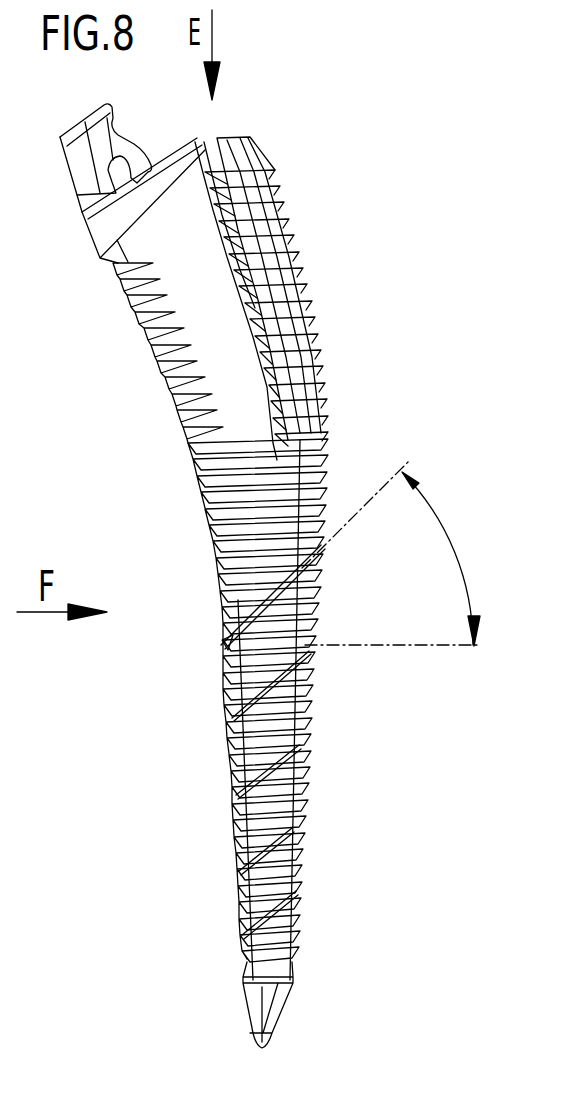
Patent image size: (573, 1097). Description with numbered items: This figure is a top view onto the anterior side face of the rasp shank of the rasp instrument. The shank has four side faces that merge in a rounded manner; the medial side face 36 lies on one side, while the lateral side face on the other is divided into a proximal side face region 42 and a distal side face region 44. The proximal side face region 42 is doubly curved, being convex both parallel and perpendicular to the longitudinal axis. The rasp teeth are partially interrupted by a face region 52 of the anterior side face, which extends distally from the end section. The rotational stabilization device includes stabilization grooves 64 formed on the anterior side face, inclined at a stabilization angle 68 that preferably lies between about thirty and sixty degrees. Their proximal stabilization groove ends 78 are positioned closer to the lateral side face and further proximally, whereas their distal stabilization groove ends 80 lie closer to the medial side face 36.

The medial side face 36 is at (118, 331).
The proximal side face region 42 is at (273, 118).
The distal side face region 44 is at (390, 552).
The face region 52 is at (198, 267).
The stabilization grooves 64 is at (272, 694).
The stabilization angle 68 is at (458, 556).
The proximal stabilization groove ends 78 is at (310, 552).
The distal stabilization groove ends 80 is at (223, 641).